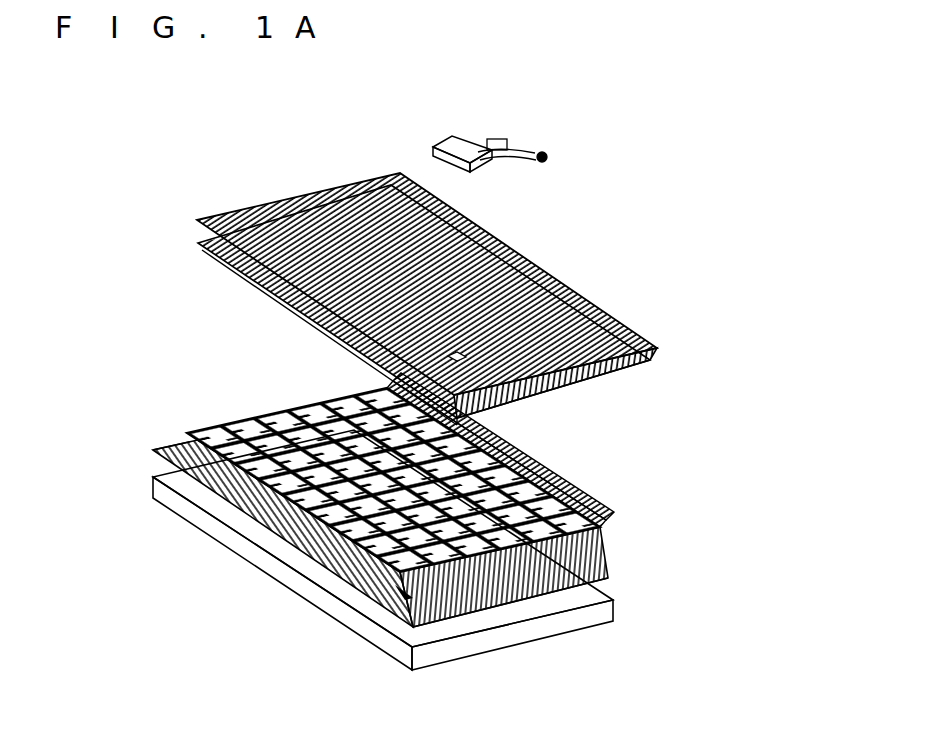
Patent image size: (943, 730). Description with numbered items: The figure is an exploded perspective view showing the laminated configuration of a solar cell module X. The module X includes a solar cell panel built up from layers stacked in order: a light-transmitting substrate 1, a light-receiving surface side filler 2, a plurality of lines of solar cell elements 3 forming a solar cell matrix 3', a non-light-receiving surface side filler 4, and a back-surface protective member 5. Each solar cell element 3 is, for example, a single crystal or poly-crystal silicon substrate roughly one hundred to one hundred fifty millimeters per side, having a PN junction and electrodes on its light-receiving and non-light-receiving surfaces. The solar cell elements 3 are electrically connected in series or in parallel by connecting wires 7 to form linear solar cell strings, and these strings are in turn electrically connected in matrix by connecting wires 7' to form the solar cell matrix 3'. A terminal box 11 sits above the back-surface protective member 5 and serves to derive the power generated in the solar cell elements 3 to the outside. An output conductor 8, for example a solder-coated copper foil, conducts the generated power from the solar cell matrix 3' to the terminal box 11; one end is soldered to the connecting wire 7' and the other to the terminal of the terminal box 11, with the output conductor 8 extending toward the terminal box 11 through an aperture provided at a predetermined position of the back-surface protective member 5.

The light-transmitting substrate 1 is at (153, 482).
The light-receiving surface side filler 2 is at (160, 450).
The solar cell element 3 is at (464, 490).
The solar cell matrix 3' is at (534, 446).
The non-light-receiving surface side filler 4 is at (650, 362).
The back-surface protective member 5 is at (590, 305).
The connecting wire 7 is at (580, 617).
The connecting wire 7' is at (554, 454).
The output conductor 8 is at (413, 598).
The terminal box 11 is at (449, 137).
The solar cell module X is at (777, 35).